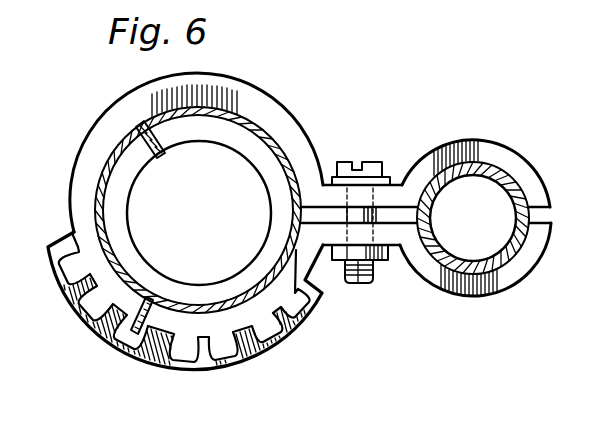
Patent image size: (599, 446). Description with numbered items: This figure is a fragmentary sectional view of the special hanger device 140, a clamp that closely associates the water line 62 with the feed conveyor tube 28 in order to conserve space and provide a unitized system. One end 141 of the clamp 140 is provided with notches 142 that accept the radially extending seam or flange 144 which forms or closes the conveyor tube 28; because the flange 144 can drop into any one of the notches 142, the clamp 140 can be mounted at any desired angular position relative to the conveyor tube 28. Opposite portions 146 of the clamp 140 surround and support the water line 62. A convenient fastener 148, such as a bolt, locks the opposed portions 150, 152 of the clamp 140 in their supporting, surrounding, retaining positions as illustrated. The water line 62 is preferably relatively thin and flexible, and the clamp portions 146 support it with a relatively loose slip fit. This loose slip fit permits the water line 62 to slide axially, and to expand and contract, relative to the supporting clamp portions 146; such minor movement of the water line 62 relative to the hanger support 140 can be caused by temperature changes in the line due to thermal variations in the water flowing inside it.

The end of the clamp 141 is at (114, 107).
The bushing 28 is at (267, 132).
The hanger device 140 is at (401, 153).
The opposed portion of the clamp 150 is at (477, 116).
The water line 62 is at (495, 170).
The fastener 148 is at (357, 284).
The opposite portions of the clamp 146 is at (463, 297).
The opposed portion of the clamp 152 is at (497, 296).
The seam or flange 144 is at (115, 346).
The notches 142 is at (186, 364).